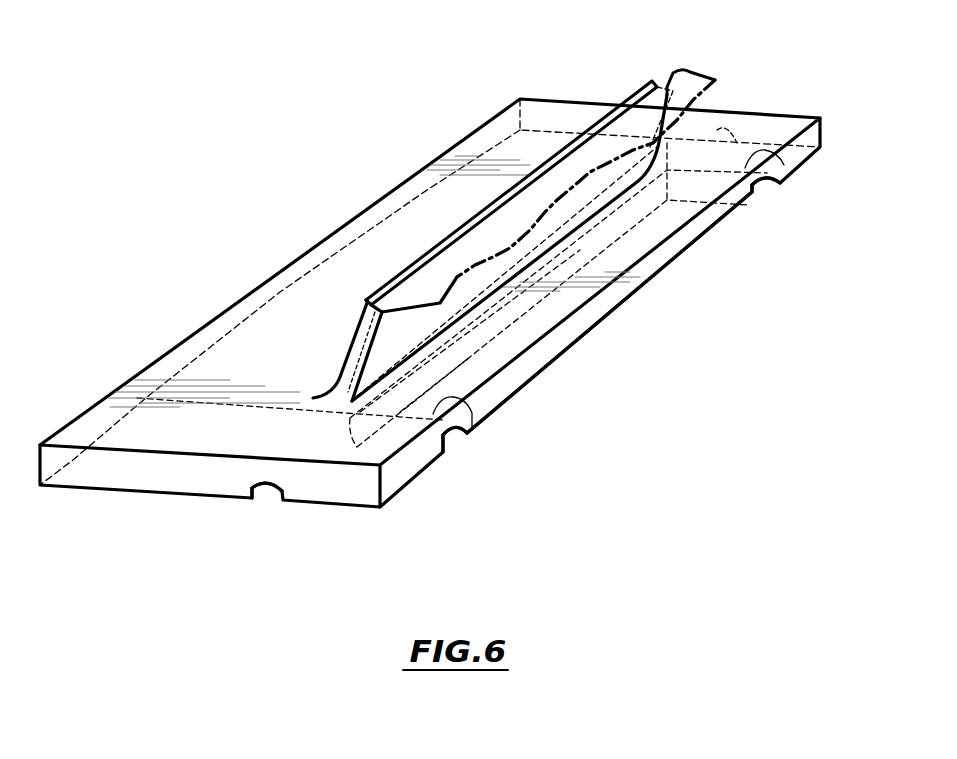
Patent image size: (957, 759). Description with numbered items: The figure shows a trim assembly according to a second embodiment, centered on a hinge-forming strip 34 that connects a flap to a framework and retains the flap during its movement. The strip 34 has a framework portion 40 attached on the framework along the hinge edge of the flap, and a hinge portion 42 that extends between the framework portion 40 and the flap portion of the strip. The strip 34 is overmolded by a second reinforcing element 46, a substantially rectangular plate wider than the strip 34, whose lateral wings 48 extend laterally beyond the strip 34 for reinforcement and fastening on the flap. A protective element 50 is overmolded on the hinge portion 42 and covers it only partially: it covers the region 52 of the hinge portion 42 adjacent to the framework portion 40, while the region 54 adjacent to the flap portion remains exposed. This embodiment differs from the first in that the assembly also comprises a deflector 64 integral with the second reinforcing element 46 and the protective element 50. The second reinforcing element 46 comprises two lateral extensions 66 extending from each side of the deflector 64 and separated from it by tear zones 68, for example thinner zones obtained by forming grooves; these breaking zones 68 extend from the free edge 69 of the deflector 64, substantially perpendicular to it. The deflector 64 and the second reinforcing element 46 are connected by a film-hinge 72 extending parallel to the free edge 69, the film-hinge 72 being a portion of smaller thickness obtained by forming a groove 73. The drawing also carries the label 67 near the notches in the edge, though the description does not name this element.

The hinge-forming strip 34 is at (697, 66).
The framework portion 40 is at (220, 331).
The hinge portion 42 is at (350, 333).
The second reinforcing element 46 is at (305, 203).
The lateral wings 48 is at (560, 120).
The protective element 50 is at (409, 321).
The region of the hinge portion adjacent to the framework portion 52 is at (362, 302).
The region of the hinge portion adjacent to the flap portion 54 is at (700, 73).
The deflector 64 is at (563, 303).
The lateral extensions 66 is at (785, 130).
The notch wall 67 is at (447, 437).
The tear zones 68 is at (477, 433).
The free edge of the deflector 69 is at (640, 277).
The film-hinge 72 is at (270, 472).
The groove 73 is at (277, 493).